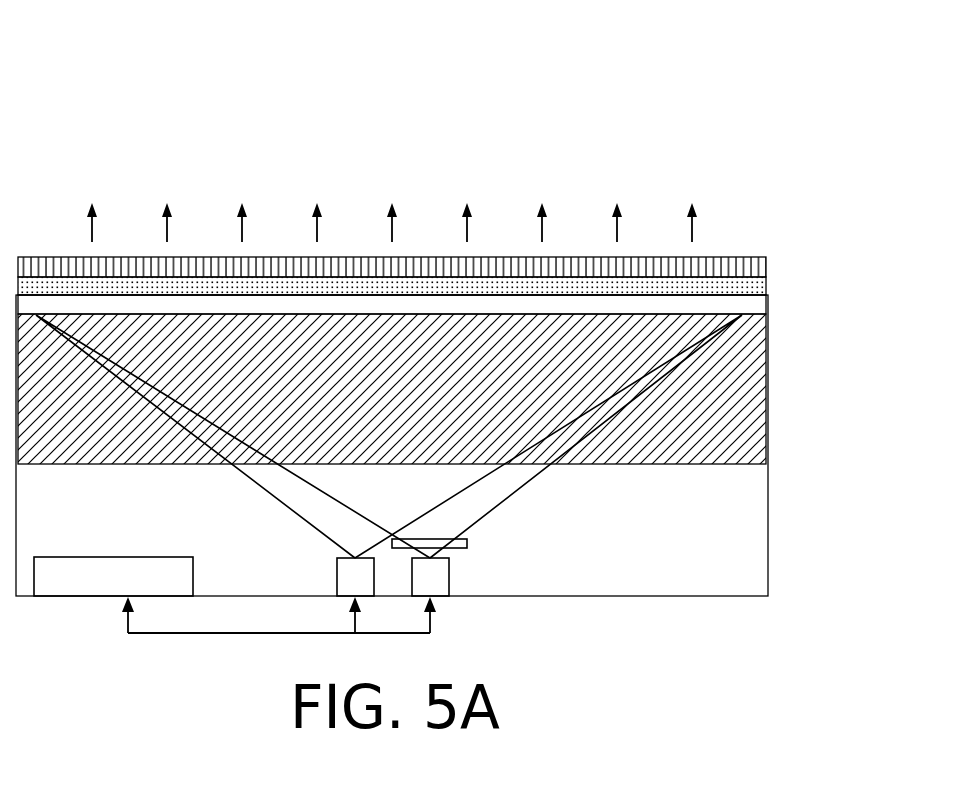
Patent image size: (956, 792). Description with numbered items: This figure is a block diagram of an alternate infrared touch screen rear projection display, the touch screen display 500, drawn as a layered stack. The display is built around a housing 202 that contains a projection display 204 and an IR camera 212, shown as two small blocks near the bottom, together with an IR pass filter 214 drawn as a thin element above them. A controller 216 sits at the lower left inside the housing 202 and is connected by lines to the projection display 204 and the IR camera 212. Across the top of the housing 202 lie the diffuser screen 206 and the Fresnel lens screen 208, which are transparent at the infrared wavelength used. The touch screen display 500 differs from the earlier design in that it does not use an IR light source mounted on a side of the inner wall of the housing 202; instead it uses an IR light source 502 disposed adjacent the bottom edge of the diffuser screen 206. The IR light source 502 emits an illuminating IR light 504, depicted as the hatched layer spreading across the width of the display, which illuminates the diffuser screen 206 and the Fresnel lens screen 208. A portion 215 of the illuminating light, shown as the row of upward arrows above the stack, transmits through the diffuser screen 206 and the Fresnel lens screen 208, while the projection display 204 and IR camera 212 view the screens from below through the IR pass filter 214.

The touch screen display 500 is at (128, 108).
The housing 202 is at (768, 556).
The projection display 204 is at (337, 577).
The diffuser screen 206 is at (768, 277).
The Fresnel lens screen 208 is at (768, 257).
The IR camera 212 is at (449, 577).
The IR pass filter 214 is at (467, 547).
The portion of illuminating IR light 215 is at (692, 230).
The controller 216 is at (82, 557).
The IR light source 502 is at (768, 295).
The illuminating IR light 504 is at (598, 464).